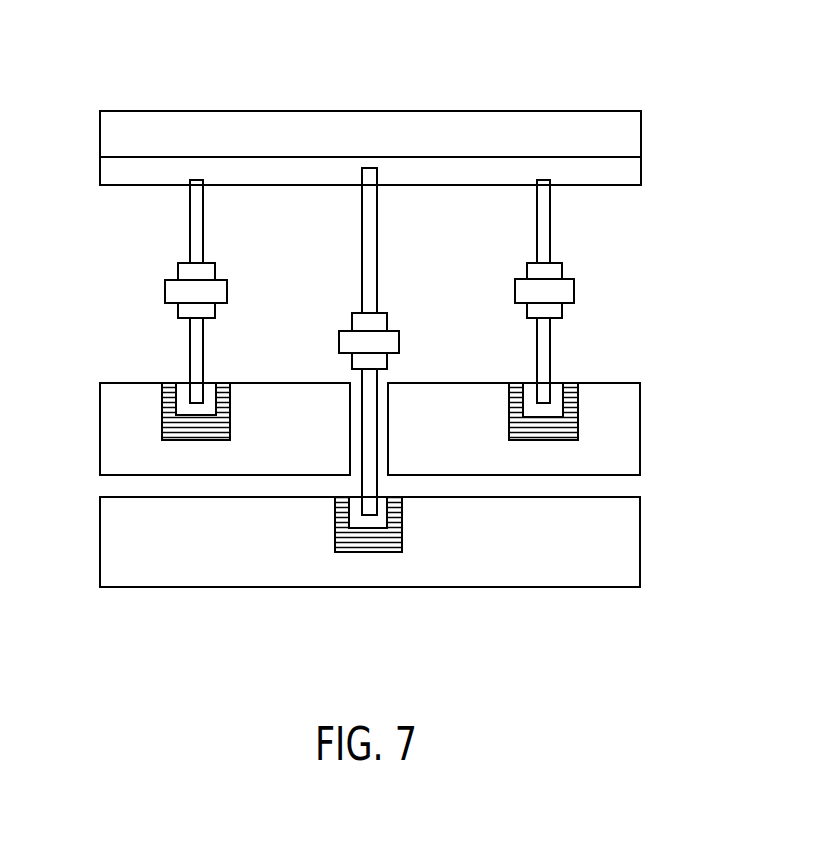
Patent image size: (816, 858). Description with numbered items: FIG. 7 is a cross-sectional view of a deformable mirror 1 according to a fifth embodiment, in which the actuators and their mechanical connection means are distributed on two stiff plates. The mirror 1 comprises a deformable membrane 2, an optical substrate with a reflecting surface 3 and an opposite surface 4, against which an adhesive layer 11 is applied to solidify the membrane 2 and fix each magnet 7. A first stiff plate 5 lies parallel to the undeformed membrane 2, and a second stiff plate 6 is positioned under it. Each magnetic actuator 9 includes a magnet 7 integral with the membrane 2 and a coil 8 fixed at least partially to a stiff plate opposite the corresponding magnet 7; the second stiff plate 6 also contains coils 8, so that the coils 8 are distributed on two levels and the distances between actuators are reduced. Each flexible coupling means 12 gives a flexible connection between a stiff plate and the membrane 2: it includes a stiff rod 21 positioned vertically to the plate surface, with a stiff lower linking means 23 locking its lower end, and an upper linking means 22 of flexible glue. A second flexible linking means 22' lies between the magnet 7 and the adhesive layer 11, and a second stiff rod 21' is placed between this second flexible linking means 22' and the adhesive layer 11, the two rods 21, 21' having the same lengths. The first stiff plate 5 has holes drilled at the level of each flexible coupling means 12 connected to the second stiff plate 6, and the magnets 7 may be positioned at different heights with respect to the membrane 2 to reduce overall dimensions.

The deformable mirror 1 is at (318, 88).
The deformable membrane 2 is at (581, 131).
The reflecting surface 3 is at (172, 110).
The opposite surface 4 is at (123, 155).
The stiff plate 5 is at (132, 455).
The second stiff plate 6 is at (142, 548).
The magnet 7 is at (168, 290).
The coil 8 is at (170, 419).
The magnetic actuator 9 is at (163, 403).
The adhesive layer 11 is at (620, 171).
The flexible coupling means 12 is at (600, 288).
The stiff rod 21 is at (597, 360).
The second stiff rod 21' is at (599, 221).
The upper linking means 22 is at (495, 333).
The second flexible linking means 22' is at (485, 251).
The lower linking means 23 is at (557, 408).